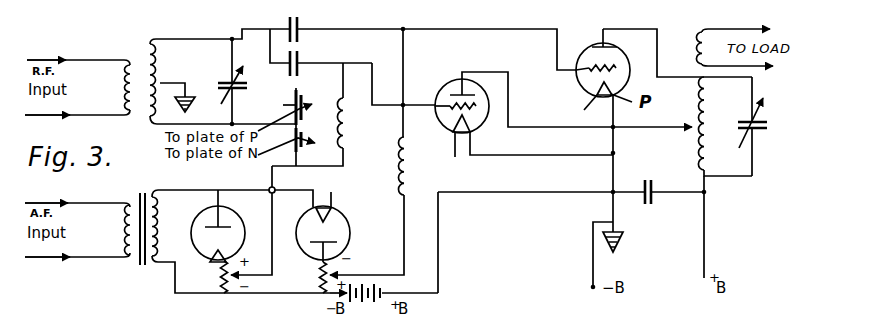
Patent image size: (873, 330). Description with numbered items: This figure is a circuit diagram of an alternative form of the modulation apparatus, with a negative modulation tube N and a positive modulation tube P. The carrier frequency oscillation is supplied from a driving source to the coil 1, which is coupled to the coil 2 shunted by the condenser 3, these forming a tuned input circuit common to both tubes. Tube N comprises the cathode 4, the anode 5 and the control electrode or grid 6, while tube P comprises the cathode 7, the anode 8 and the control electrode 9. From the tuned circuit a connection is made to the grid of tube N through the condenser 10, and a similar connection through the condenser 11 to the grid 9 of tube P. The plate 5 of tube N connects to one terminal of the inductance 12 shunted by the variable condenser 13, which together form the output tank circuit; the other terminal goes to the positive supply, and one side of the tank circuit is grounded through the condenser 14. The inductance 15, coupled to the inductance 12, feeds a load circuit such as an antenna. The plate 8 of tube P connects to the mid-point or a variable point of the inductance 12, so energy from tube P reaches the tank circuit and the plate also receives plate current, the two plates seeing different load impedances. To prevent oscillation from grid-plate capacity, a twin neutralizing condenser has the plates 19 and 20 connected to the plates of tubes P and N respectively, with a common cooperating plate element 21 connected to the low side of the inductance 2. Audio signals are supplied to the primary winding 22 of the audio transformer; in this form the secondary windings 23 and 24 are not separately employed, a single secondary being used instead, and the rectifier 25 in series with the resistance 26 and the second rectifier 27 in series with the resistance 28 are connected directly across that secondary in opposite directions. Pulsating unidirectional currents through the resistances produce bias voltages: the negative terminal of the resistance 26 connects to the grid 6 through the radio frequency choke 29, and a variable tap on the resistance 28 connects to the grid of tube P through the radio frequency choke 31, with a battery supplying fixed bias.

The coil 1 is at (122, 99).
The coil 2 is at (162, 53).
The condenser 3 is at (233, 81).
The cathode 4 is at (481, 124).
The anode 5 is at (468, 92).
The control electrode or grid 6 is at (477, 106).
The cathode 7 is at (589, 105).
The anode 8 is at (600, 41).
The control electrode 9 is at (619, 67).
The condenser 10 is at (303, 57).
The condenser 11 is at (302, 23).
The inductance 12 is at (707, 117).
The variable condenser 13 is at (767, 117).
The condenser 14 is at (654, 201).
The inductance 15 is at (708, 42).
The plate 19 is at (298, 101).
The plate 20 is at (302, 148).
The common cooperating plate element 21 is at (278, 106).
The primary winding 22 is at (122, 212).
The secondary winding 23 is at (164, 227).
The secondary winding 24 is at (192, 62).
The rectifier 25 is at (240, 221).
The resistance 26 is at (219, 277).
The second rectifier 27 is at (352, 228).
The resistance 28 is at (338, 270).
The radio frequency choke 29 is at (348, 126).
The radio frequency choke 31 is at (400, 183).